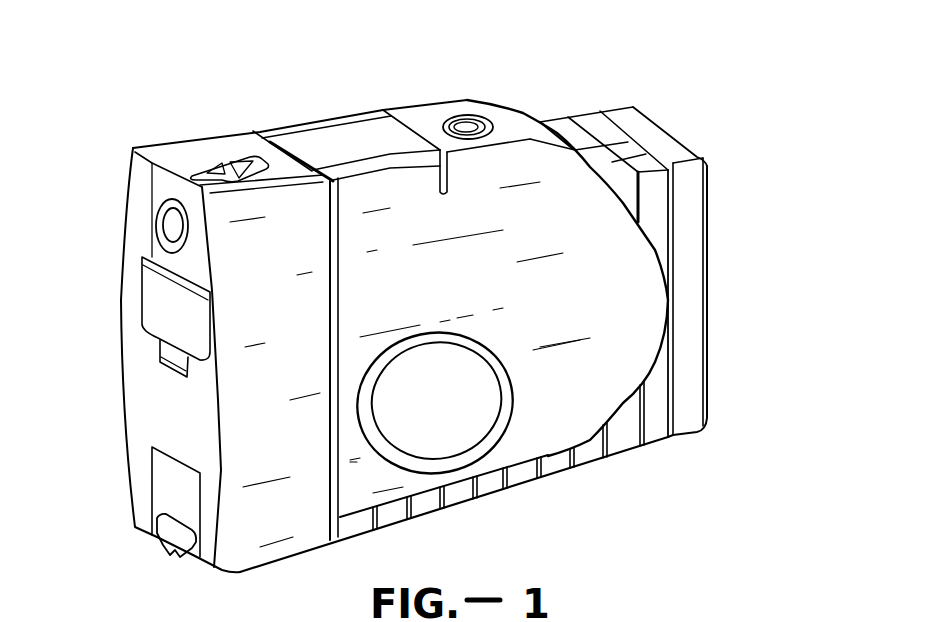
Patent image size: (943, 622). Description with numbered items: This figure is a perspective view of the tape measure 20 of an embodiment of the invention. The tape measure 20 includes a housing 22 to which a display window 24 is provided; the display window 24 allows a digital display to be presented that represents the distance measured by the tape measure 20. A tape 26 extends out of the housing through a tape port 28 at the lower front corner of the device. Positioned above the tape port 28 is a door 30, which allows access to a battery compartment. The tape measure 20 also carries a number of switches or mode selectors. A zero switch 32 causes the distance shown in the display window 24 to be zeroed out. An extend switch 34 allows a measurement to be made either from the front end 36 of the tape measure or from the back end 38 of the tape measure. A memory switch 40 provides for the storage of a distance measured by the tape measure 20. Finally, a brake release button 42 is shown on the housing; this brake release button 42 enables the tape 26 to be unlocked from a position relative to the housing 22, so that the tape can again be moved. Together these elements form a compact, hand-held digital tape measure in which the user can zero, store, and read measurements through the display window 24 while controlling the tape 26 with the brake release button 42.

The tape measure 20 is at (394, 336).
The housing 22 is at (641, 131).
The display window 24 is at (320, 137).
The tape 26 is at (173, 553).
The tape port 28 is at (190, 560).
The door 30 is at (147, 277).
The zero switch 32 is at (170, 218).
The extend switch 34 is at (208, 163).
The front end 36 is at (135, 418).
The back end 38 is at (705, 178).
The memory switch 40 is at (468, 125).
The brake release button 42 is at (487, 414).